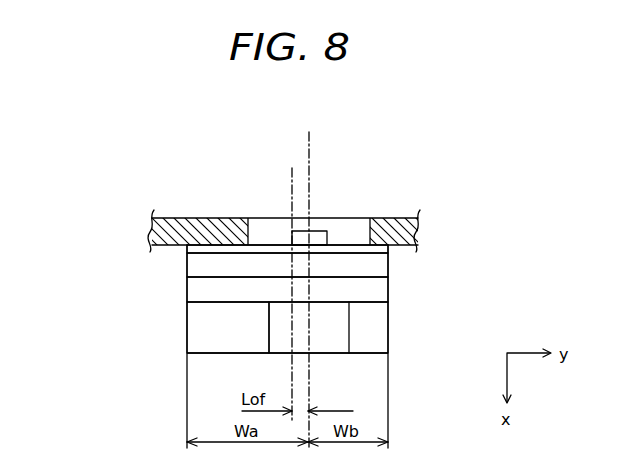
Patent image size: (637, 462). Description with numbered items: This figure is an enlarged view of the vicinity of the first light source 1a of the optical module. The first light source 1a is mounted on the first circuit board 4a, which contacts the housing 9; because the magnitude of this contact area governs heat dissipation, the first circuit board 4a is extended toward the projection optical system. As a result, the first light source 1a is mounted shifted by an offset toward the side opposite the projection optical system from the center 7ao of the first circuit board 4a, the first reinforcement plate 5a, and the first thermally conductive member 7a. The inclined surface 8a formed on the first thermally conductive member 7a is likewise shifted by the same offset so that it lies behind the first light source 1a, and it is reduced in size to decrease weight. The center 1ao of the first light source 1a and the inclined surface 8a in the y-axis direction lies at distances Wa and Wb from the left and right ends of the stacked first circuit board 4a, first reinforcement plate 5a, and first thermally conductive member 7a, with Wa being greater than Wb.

The housing 9 is at (399, 246).
The first light source 1a is at (315, 230).
The center of the first light source and the inclined surface 1ao is at (309, 149).
The center of the first circuit board, first reinforcement plate, and first thermall 7ao is at (292, 185).
The first circuit board 4a is at (192, 249).
The first reinforcement plate 5a is at (195, 267).
The first thermally conductive member 7a is at (195, 323).
The inclined surface 8a is at (338, 322).